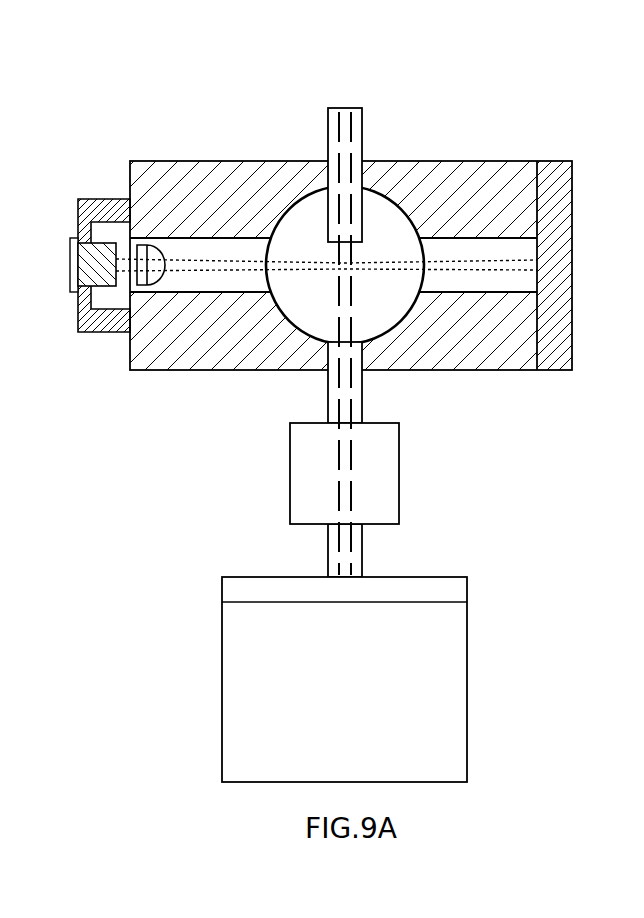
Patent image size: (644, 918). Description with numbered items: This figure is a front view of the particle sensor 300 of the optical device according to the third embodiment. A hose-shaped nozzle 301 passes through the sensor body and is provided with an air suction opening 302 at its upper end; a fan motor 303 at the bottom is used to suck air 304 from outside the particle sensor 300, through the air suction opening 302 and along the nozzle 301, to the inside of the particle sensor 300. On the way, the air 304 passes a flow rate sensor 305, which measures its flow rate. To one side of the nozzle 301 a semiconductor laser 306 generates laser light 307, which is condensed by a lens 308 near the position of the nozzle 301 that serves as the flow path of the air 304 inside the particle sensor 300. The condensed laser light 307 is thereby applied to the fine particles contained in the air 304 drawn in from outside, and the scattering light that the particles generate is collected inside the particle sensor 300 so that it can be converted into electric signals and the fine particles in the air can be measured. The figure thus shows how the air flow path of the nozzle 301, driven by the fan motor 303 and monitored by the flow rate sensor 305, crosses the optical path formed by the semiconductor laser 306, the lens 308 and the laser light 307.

The particle sensor 300 is at (335, 417).
The hose-shaped nozzle 301 is at (363, 130).
The air suction opening 302 is at (346, 104).
The fan motor 303 is at (467, 633).
The air 304 is at (338, 382).
The flow rate sensor 305 is at (399, 470).
The semiconductor laser 306 is at (109, 288).
The laser light 307 is at (394, 268).
The lens 308 is at (148, 243).